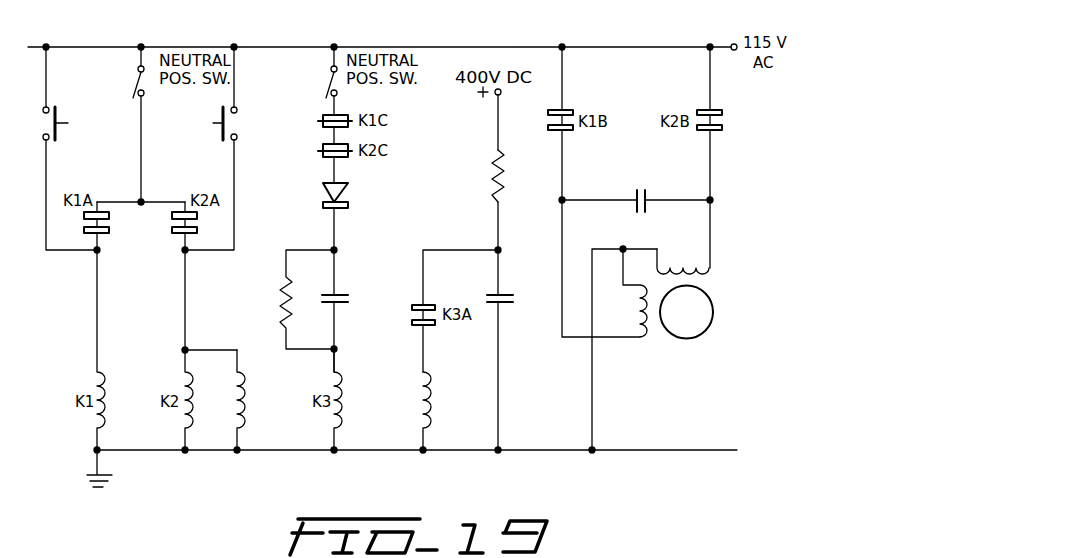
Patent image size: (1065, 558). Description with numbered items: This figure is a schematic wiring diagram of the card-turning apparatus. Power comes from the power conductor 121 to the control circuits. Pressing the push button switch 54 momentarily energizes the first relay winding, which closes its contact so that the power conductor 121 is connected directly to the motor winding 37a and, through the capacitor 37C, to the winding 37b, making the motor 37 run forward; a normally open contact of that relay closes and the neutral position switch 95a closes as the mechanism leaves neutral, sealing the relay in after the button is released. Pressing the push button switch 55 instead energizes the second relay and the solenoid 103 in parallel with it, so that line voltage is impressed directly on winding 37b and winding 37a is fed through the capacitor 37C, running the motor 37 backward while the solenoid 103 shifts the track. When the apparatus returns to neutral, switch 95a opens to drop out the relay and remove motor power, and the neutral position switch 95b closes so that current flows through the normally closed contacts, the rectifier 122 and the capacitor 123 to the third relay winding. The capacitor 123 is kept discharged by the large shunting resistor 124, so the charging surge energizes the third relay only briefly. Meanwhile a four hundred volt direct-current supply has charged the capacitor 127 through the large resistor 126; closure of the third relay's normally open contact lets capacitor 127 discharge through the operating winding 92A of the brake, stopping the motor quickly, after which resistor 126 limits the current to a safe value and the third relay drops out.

The motor 37 is at (713, 312).
The motor winding 37a is at (645, 337).
The motor winding 37b is at (705, 276).
The capacitor 37C is at (647, 206).
The push button switch 54 is at (68, 123).
The push button switch 55 is at (213, 123).
The operating winding 92A is at (432, 400).
The neutral position switch 95a is at (137, 78).
The neutral position switch 95b is at (330, 78).
The solenoid 103 is at (246, 410).
The power conductor 121 is at (613, 51).
The rectifier 122 is at (348, 195).
The capacitor 123 is at (340, 294).
The shunting resistor 124 is at (280, 296).
The resistor 126 is at (492, 176).
The capacitor 127 is at (505, 294).